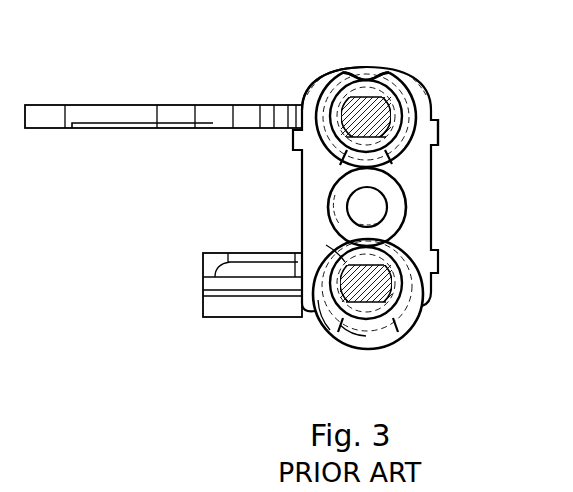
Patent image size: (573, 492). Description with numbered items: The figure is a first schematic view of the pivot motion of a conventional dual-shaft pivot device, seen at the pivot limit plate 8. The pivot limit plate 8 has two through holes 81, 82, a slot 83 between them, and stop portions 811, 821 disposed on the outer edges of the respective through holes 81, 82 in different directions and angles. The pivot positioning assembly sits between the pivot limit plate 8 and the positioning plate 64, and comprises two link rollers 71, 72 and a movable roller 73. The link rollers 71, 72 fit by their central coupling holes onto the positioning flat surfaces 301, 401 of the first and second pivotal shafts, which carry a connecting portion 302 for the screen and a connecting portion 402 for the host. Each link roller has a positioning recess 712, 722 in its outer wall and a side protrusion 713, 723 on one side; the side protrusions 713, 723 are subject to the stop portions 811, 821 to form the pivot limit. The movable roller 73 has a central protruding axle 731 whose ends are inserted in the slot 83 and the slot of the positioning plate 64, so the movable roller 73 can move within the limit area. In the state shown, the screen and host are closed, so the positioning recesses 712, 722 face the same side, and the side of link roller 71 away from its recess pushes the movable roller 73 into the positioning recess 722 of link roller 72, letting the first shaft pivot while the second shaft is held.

The pivot limit plate 8 is at (298, 85).
The through hole 81 is at (400, 64).
The stop portion 811 is at (432, 83).
The positioning recess 712 is at (367, 76).
The positioning flat surface 301 is at (316, 80).
The link roller 71 is at (438, 122).
The side protrusion 713 is at (395, 161).
The positioning plate 64 is at (403, 168).
The movable roller 73 is at (400, 233).
The axle 731 is at (368, 208).
The slot 83 is at (356, 190).
The through hole 82 is at (346, 256).
The link roller 72 is at (415, 307).
The positioning recess 722 is at (368, 292).
The side protrusion 723 is at (395, 328).
The stop portion 821 is at (312, 318).
The positioning flat surface 401 is at (360, 308).
The connecting portion 302 is at (147, 105).
The connecting portion 402 is at (235, 253).